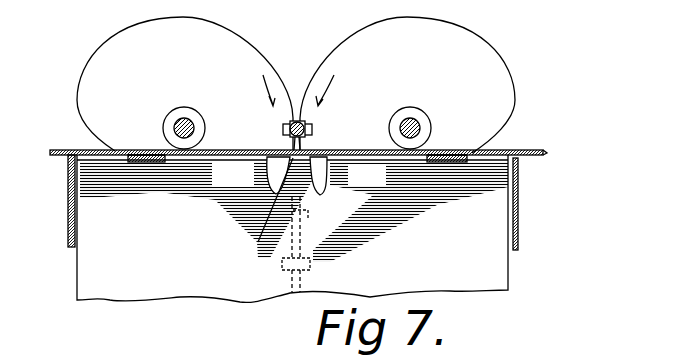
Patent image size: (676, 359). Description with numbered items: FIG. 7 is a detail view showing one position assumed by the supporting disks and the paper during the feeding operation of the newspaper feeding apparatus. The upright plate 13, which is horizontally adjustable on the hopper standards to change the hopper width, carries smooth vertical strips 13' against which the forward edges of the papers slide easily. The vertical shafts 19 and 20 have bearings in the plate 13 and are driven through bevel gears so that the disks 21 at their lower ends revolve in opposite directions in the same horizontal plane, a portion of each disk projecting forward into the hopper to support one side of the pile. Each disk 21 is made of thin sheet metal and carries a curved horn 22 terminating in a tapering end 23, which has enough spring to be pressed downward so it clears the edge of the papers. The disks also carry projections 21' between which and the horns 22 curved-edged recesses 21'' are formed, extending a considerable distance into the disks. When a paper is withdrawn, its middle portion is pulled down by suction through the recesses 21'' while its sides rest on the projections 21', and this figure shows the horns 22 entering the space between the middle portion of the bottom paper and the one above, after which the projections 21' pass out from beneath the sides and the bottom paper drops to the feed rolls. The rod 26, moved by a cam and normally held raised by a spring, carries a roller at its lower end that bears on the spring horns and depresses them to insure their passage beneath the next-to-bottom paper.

The upright plate 13 is at (317, 200).
The vertical strips 13' is at (299, 193).
The vertical shaft 19 is at (180, 140).
The vertical shaft 20 is at (410, 148).
The disk 21 is at (296, 85).
The projection 21' is at (300, 141).
The recess 21'' is at (294, 211).
The curved horn 22 is at (297, 154).
The tapering end 23 is at (318, 170).
The rod 26 is at (297, 120).